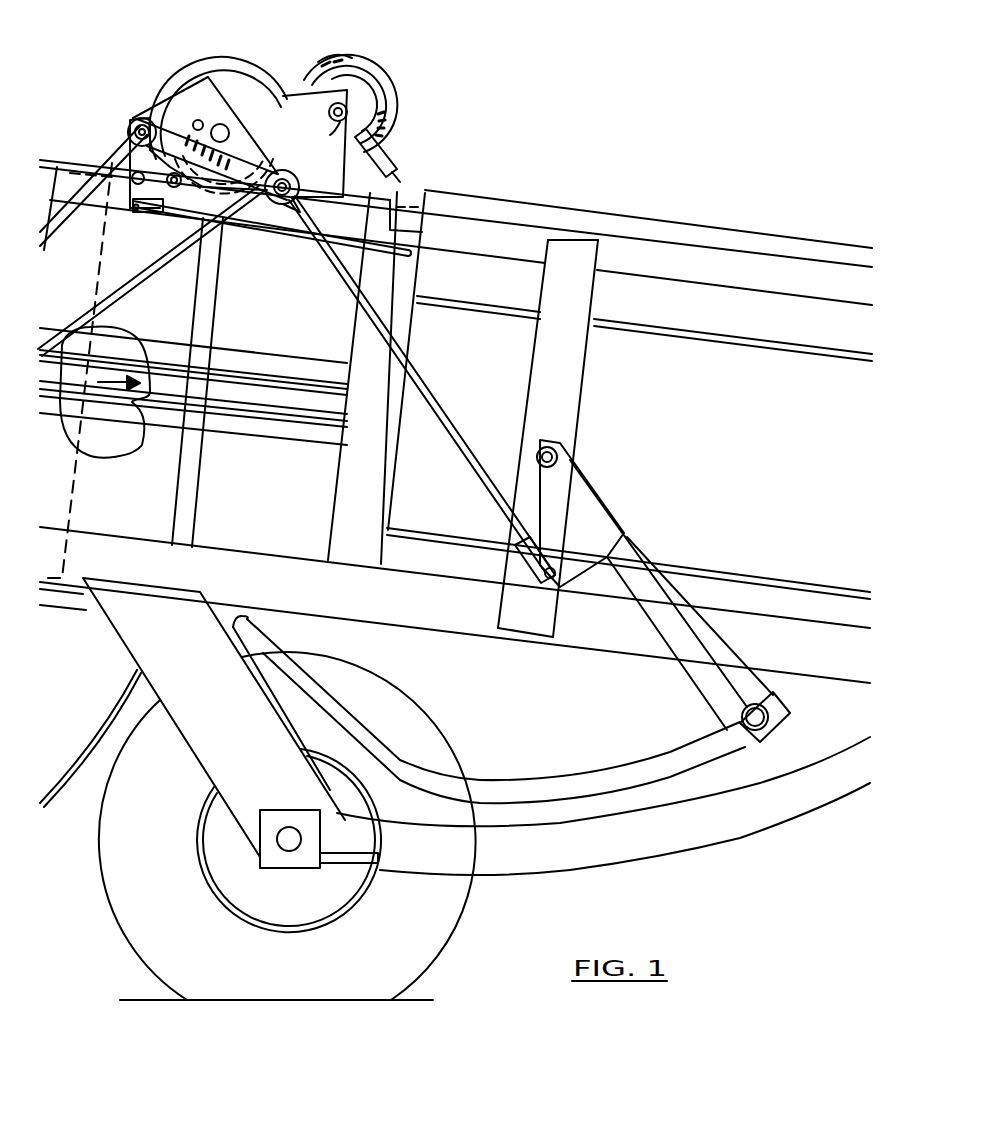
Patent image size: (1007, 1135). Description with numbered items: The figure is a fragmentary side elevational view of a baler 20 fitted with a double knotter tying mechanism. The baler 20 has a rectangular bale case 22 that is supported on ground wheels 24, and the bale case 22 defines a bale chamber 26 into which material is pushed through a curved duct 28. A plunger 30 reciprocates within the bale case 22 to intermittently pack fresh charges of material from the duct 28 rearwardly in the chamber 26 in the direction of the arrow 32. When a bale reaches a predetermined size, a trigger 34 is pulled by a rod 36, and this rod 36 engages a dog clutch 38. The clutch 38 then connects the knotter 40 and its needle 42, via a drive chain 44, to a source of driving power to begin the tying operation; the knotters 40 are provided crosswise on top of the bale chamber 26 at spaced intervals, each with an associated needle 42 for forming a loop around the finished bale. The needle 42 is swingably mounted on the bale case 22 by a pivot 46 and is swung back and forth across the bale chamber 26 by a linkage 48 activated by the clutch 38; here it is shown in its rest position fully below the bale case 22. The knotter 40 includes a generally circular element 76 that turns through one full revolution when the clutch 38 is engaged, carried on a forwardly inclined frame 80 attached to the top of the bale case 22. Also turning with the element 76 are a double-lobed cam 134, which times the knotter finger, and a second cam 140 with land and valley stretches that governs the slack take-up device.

The baler 20 is at (455, 404).
The bale case 22 is at (711, 258).
The ground wheels 24 is at (440, 925).
The bale chamber 26 is at (124, 342).
The curved duct 28 is at (53, 770).
The plunger 30 is at (77, 433).
The arrow 32 is at (108, 386).
The trigger 34 is at (134, 157).
The rod 36 is at (260, 231).
The dog clutch 38 is at (220, 70).
The knotter 40 is at (382, 70).
The needle 42 is at (520, 765).
The drive chain 44 is at (142, 118).
The pivot 46 is at (566, 458).
The linkage 48 is at (437, 393).
The circular element 76 is at (402, 100).
The knotter frame 80 is at (388, 163).
The double-lobed cam 134 is at (332, 46).
The second cam 140 is at (410, 130).